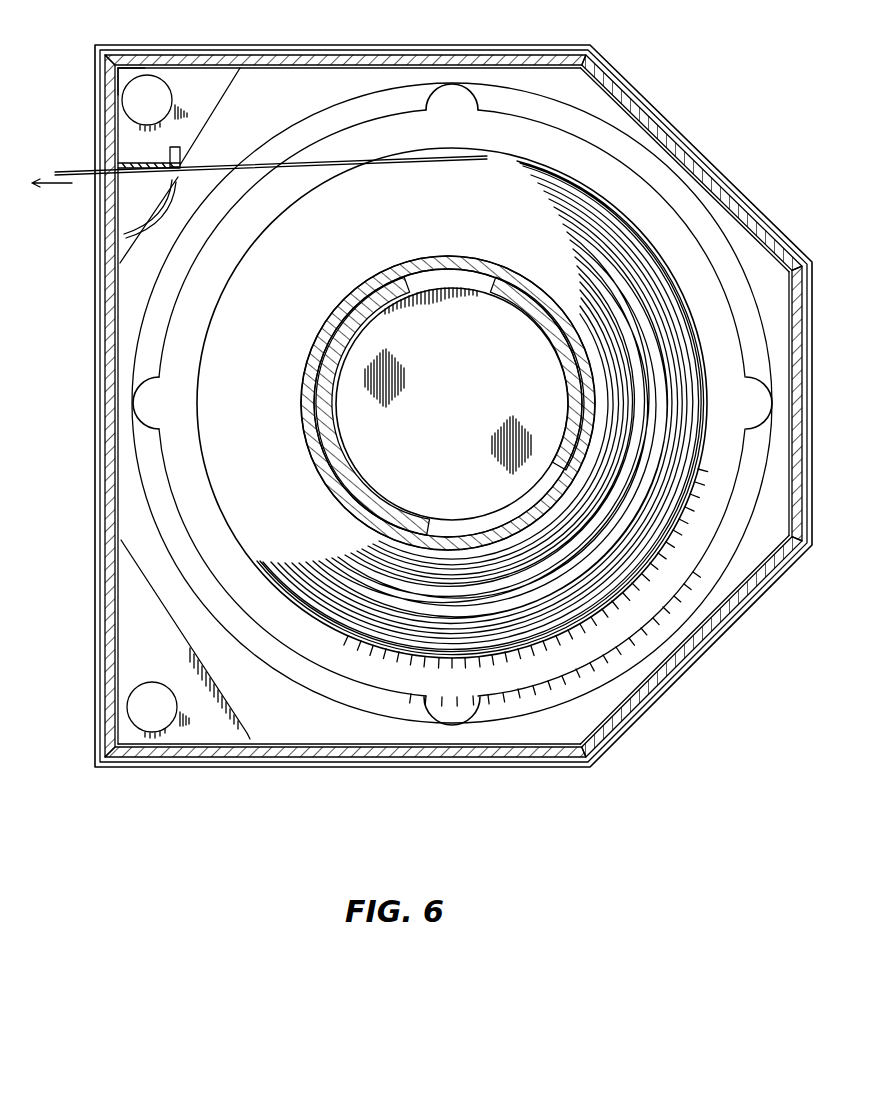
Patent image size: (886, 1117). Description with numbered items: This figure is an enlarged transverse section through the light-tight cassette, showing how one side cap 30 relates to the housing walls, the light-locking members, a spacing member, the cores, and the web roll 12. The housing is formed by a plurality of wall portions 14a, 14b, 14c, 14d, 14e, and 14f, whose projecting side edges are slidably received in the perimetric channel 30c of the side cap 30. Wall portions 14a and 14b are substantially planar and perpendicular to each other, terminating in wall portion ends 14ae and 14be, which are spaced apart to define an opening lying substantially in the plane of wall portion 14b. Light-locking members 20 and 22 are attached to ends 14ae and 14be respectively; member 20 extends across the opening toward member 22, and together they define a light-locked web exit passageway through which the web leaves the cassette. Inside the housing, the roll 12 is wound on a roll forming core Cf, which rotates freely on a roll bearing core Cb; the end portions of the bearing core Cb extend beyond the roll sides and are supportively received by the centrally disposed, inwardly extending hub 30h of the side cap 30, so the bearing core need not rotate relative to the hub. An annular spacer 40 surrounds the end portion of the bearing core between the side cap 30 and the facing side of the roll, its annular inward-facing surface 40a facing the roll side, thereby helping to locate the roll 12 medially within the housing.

The wall portion end 14ae is at (94, 46).
The housing wall portion 14a is at (440, 44).
The side cap 30 is at (678, 123).
The perimetric channel 30c is at (700, 158).
The housing wall portion 14f is at (733, 191).
The light-locking member 20 is at (176, 165).
The wall portion end 14be is at (96, 198).
The light-locking member 22 is at (94, 230).
The annular inward-facing surface 40a is at (468, 134).
The roll forming core Cf is at (333, 323).
The roll bearing core Cb is at (322, 384).
The hub 30h is at (460, 477).
The roll 12 is at (197, 408).
The housing wall portion 14e is at (795, 395).
The housing wall portion 14b is at (100, 622).
The annular spacer 40 is at (272, 642).
The housing wall portion 14d is at (700, 650).
The housing wall portion 14c is at (242, 762).